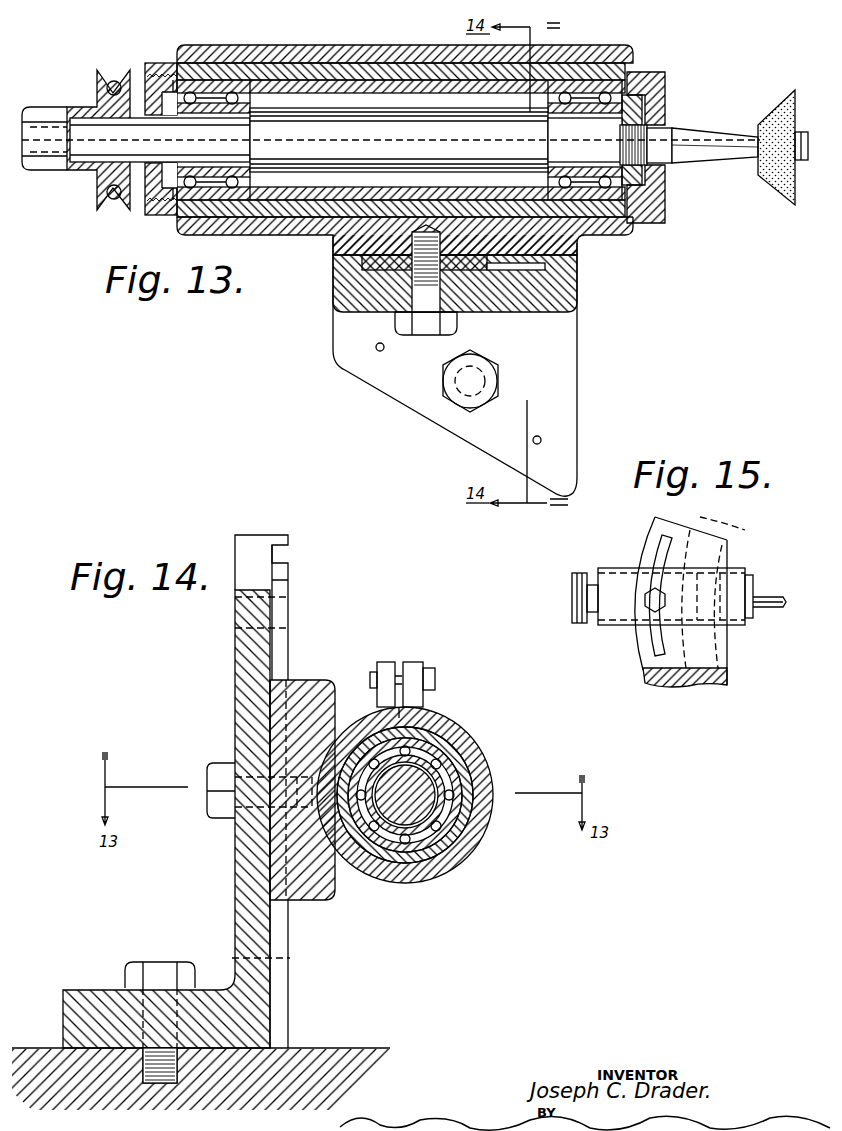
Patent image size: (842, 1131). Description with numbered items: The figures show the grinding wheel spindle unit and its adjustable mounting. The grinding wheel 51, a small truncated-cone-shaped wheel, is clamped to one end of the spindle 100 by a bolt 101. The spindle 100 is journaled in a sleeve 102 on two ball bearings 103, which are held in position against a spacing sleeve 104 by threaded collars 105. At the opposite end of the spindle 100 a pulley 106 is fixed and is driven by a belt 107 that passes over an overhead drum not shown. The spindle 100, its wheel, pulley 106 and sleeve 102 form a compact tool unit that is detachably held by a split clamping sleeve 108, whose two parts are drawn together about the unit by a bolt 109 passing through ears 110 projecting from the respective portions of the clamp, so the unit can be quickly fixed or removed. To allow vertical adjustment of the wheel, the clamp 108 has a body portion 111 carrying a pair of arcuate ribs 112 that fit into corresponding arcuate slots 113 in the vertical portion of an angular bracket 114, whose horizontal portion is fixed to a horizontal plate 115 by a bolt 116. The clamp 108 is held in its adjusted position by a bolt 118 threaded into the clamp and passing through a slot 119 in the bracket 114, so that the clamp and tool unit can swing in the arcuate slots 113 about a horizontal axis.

In FIG. 13, the grinding wheel 51 is at (783, 105).
In FIG. 13, the spindle 100 is at (745, 168).
In FIG. 14, the spindle 100 is at (403, 813).
In FIG. 15, the spindle 100 is at (777, 604).
In FIG. 13, the bolt 101 is at (803, 172).
In FIG. 13, the sleeve 102 is at (647, 72).
In FIG. 15, the sleeve 102 is at (753, 588).
In FIG. 13, the ball bearings 103 is at (207, 88).
In FIG. 14, the ball bearings 103 is at (412, 833).
In FIG. 13, the spacing sleeve 104 is at (403, 82).
In FIG. 13, the threaded collars 105 is at (147, 92).
In FIG. 13, the pulley 106 is at (97, 197).
In FIG. 15, the pulley 106 is at (572, 588).
In FIG. 13, the belt 107 is at (115, 198).
In FIG. 13, the split clamping sleeve 108 is at (325, 56).
In FIG. 14, the split clamping sleeve 108 is at (484, 748).
In FIG. 15, the split clamping sleeve 108 is at (736, 568).
In FIG. 14, the bolt 109 is at (428, 682).
In FIG. 14, the ears 110 is at (387, 663).
In FIG. 13, the body portion 111 is at (577, 252).
In FIG. 14, the body portion 111 is at (308, 693).
In FIG. 13, the arcuate ribs 112 is at (522, 277).
In FIG. 14, the arcuate ribs 112 is at (277, 723).
In FIG. 13, the arcuate slots 113 is at (565, 290).
In FIG. 14, the arcuate slots 113 is at (283, 638).
In FIG. 15, the arcuate slots 113 is at (733, 548).
In FIG. 13, the angular bracket 114 is at (566, 368).
In FIG. 14, the angular bracket 114 is at (240, 628).
In FIG. 15, the angular bracket 114 is at (717, 652).
In FIG. 14, the horizontal plate 115 is at (320, 1060).
In FIG. 13, the bolt 116 is at (462, 400).
In FIG. 14, the bolt 116 is at (158, 972).
In FIG. 13, the bolt 118 is at (428, 326).
In FIG. 14, the bolt 118 is at (213, 773).
In FIG. 15, the bolt 118 is at (652, 611).
In FIG. 13, the slot 119 is at (415, 287).
In FIG. 15, the slot 119 is at (660, 641).